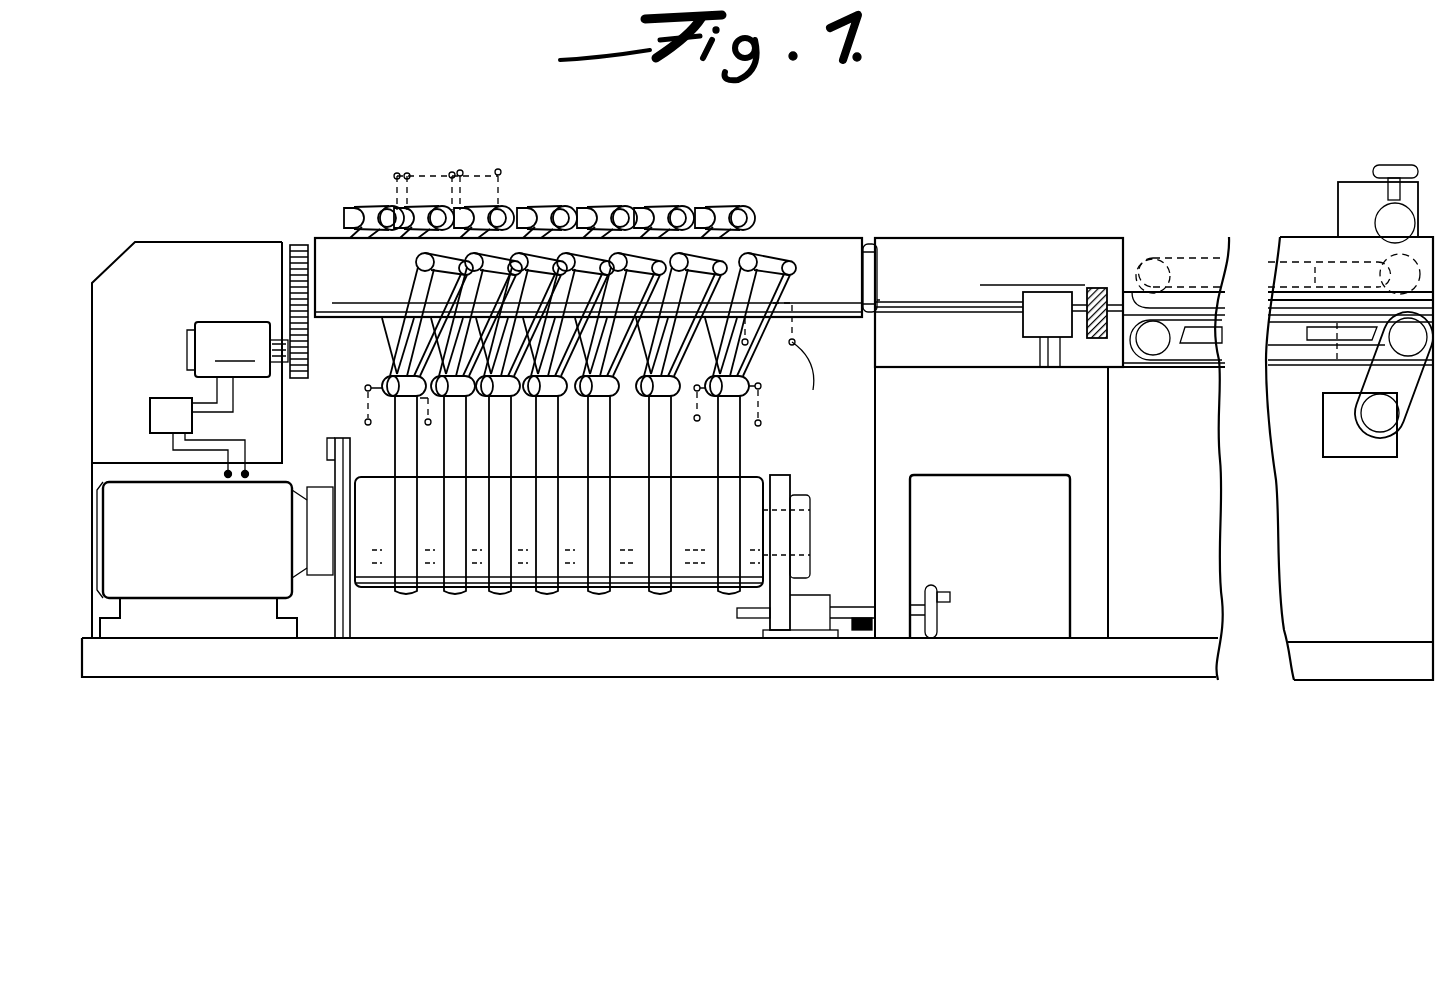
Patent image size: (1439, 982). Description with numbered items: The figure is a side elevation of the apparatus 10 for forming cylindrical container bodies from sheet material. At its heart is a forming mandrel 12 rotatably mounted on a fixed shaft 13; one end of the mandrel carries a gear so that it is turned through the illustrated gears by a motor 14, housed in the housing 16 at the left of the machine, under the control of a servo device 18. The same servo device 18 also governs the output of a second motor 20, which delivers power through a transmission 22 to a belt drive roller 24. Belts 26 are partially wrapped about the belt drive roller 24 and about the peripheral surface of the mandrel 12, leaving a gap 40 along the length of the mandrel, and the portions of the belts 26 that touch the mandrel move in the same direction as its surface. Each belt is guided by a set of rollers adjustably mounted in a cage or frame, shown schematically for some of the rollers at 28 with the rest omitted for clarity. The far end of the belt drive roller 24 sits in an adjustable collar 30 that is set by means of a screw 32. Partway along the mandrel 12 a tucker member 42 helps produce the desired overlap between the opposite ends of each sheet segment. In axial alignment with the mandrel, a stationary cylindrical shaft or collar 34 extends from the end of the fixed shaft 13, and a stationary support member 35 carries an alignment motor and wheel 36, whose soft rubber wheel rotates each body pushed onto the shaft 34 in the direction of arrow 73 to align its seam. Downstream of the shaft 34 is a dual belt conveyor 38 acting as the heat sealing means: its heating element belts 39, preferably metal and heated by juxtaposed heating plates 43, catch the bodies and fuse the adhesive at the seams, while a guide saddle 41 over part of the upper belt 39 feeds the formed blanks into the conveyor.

The apparatus 10 is at (318, 186).
The forming mandrel 12 is at (814, 243).
The fixed shaft 13 is at (291, 248).
The motor 14 is at (206, 330).
The housing 16 is at (178, 255).
The servo device 18 is at (157, 412).
The motor 20 is at (248, 584).
The transmission 22 is at (318, 568).
The belt drive roller 24 is at (378, 582).
The belts 26 is at (400, 594).
The cage or frame 28 is at (330, 178).
The adjustable collar 30 is at (860, 466).
The screw 32 is at (853, 627).
The stationary cylindrical shaft or collar 34 is at (1050, 240).
The stationary support member 35 is at (955, 345).
The alignment motor and wheel 36 is at (1085, 324).
The dual belt conveyor 38 is at (1255, 188).
The heating element belts 39 is at (1183, 360).
The gap 40 is at (820, 182).
The guide saddle 41 is at (1388, 208).
The tucker member 42 is at (448, 295).
The heating plates 43 is at (1317, 267).
The arrow 73 is at (868, 318).